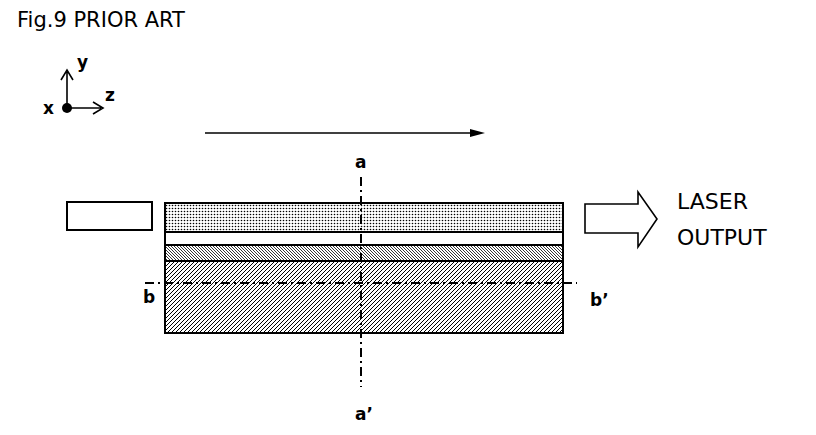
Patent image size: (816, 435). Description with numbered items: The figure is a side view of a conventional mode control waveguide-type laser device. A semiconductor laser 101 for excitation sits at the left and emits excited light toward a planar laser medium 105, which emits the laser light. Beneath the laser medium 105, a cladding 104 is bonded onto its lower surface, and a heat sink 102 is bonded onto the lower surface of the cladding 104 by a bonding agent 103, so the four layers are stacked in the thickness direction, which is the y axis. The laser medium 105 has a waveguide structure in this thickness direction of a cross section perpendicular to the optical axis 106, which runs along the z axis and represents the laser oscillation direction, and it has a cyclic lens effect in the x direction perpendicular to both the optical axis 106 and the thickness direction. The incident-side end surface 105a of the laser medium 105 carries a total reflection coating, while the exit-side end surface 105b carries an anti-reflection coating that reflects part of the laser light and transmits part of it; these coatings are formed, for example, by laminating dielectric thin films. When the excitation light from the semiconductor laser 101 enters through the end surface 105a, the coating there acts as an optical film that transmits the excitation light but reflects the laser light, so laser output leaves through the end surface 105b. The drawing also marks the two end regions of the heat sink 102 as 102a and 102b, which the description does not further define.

The semiconductor laser 101 is at (108, 207).
The heat sink 102 is at (195, 333).
The substrate end face 102a is at (165, 322).
The substrate end face 102b is at (563, 320).
The bonding agent 103 is at (165, 254).
The cladding 104 is at (163, 240).
The laser medium 105 is at (205, 202).
The end surface 105a is at (168, 203).
The end surface 105b is at (560, 222).
The optical axis 106 is at (302, 132).